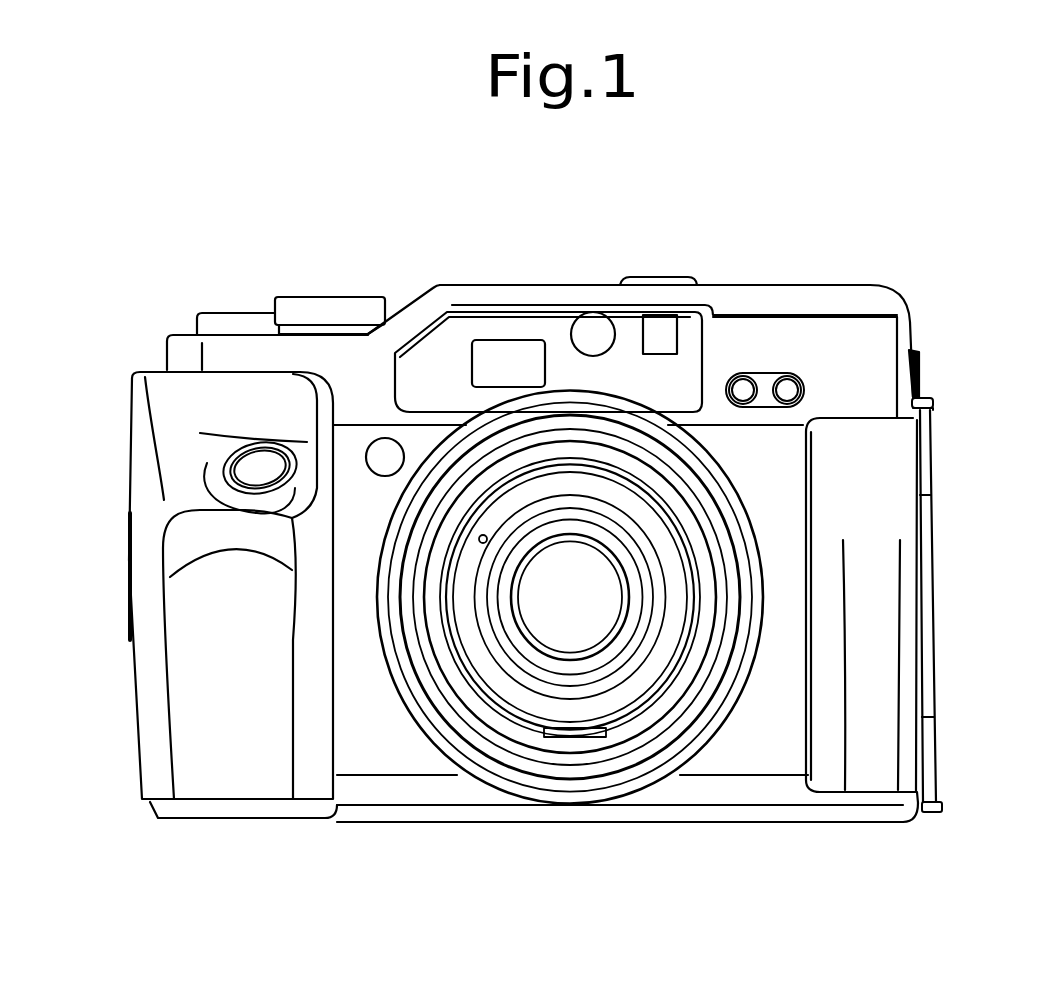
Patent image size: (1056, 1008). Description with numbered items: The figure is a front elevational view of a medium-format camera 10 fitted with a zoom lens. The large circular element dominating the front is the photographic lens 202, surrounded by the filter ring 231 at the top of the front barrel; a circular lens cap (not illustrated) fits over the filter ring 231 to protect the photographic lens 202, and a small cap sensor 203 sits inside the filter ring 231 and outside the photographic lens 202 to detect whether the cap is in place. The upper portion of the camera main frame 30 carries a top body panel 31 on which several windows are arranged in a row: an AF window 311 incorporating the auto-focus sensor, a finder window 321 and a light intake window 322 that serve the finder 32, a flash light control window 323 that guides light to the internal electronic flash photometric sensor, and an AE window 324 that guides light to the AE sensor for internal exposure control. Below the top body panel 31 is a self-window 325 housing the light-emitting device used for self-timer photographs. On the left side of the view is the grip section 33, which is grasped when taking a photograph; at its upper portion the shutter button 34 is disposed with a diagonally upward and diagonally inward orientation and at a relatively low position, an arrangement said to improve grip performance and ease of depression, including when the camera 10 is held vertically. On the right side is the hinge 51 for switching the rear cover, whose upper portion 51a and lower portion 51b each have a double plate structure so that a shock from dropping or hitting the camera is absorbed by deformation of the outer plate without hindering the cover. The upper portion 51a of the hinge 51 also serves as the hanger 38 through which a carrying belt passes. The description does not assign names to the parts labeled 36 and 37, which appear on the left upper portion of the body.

The camera 10 is at (880, 262).
The camera main frame 30 is at (942, 333).
The top body panel 31 is at (873, 343).
The finder 32 is at (666, 277).
The grip section 33 is at (215, 675).
The shutter button 34 is at (257, 467).
The flash unit 36 is at (290, 313).
The flash housing 37 is at (197, 315).
The hanger 38 is at (931, 396).
The hinge 51 is at (933, 488).
The upper portion of the hinge 51a is at (943, 408).
The lower portion of the hinge 51b is at (946, 818).
The photographic lens 202 is at (597, 611).
The cap sensor 203 is at (479, 537).
The filter ring 231 is at (650, 500).
The AF window 311 is at (488, 367).
The finder window 321 is at (590, 330).
The light intake window 322 is at (657, 330).
The flash light control window 323 is at (743, 388).
The AE window 324 is at (787, 388).
The self-window 325 is at (377, 453).